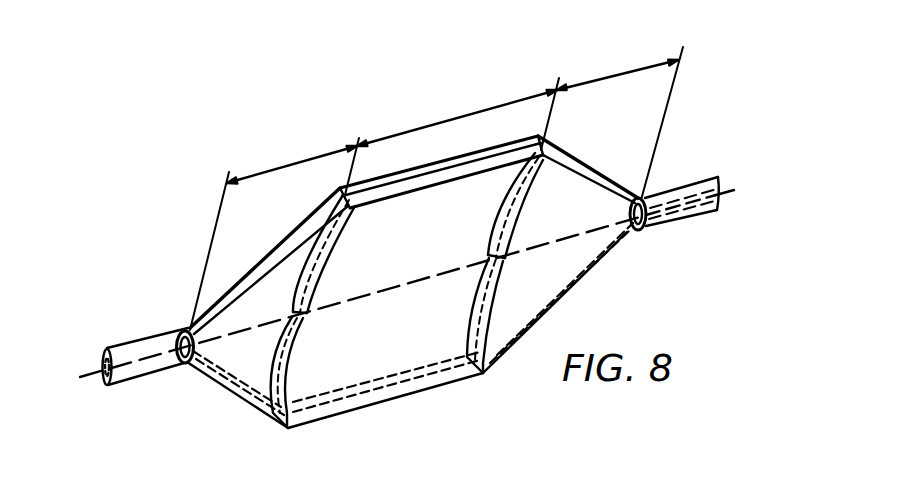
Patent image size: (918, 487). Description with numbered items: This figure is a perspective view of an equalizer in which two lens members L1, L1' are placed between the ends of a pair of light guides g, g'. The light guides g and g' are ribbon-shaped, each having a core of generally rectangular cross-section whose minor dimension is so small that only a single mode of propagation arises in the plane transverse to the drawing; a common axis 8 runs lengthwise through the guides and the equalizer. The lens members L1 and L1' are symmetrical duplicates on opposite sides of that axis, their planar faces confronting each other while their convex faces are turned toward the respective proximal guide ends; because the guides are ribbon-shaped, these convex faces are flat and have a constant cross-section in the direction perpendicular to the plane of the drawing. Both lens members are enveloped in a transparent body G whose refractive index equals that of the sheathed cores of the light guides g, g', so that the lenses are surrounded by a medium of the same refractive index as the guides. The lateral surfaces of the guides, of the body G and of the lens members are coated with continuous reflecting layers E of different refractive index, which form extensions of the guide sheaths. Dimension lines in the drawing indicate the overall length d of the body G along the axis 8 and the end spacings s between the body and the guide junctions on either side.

The axis of the frame 8 is at (411, 281).
The light guide g is at (148, 343).
The light guide g' is at (674, 222).
The reflecting layer E is at (290, 253).
The transparent body G is at (462, 168).
The lens member L1 is at (333, 311).
The lens member L1' is at (500, 263).
The end spacing s is at (436, 188).
The frame length d is at (458, 114).